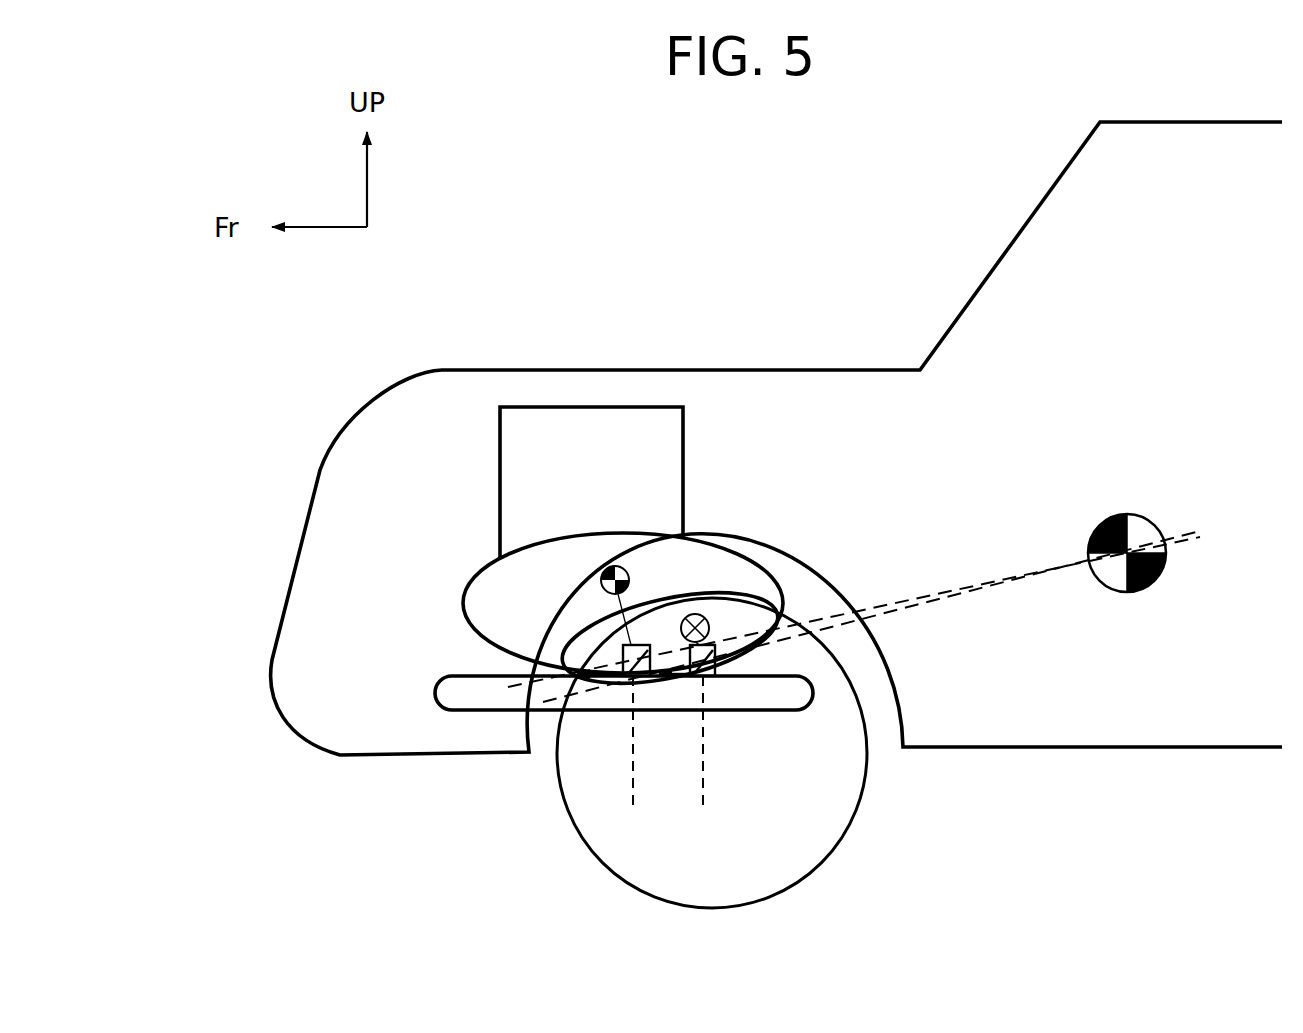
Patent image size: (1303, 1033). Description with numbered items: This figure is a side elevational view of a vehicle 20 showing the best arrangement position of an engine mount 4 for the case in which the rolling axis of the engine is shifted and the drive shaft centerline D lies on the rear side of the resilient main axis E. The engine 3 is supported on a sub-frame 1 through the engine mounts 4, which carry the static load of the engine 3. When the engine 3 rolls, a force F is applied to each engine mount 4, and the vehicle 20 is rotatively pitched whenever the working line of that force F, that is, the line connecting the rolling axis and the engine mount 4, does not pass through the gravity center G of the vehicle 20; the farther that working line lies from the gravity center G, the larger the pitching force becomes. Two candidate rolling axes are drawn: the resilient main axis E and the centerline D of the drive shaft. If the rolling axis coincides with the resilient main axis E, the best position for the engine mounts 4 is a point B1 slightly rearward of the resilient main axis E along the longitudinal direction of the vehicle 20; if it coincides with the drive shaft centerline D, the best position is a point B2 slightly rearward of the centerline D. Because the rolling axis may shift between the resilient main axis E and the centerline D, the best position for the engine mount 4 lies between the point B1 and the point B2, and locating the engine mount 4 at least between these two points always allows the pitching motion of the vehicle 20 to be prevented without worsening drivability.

The sub-frame 1 is at (458, 717).
The engine 3 is at (687, 452).
The engine mount 4 is at (622, 664).
The vehicle 20 is at (822, 368).
The resilient main axis E is at (603, 570).
The centerline of drive shaft D is at (712, 624).
The gravity center of vehicle G is at (1143, 515).
The force F is at (622, 693).
The point B1 is at (635, 764).
The point B2 is at (705, 764).